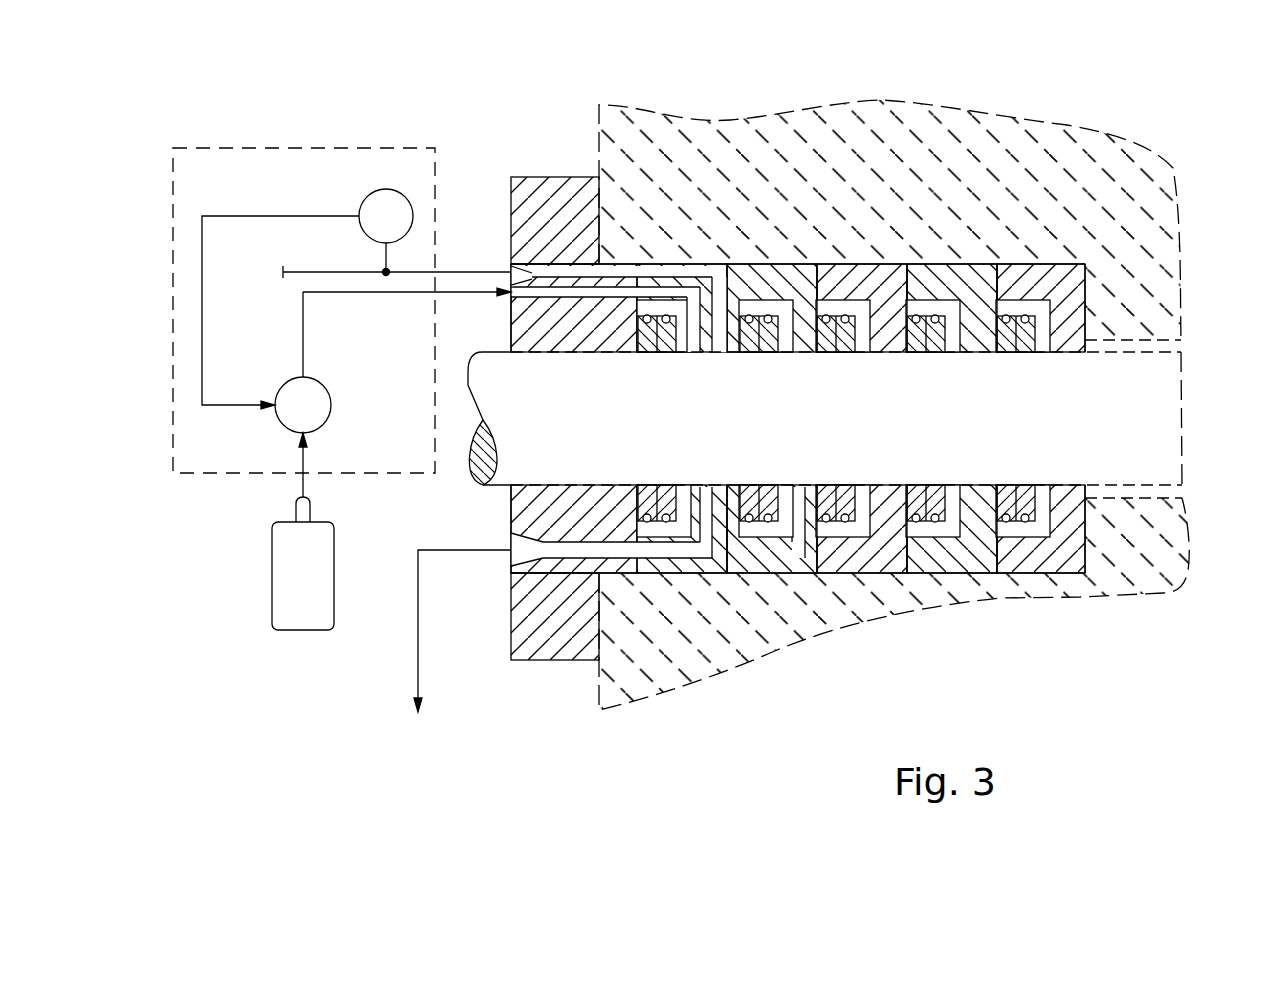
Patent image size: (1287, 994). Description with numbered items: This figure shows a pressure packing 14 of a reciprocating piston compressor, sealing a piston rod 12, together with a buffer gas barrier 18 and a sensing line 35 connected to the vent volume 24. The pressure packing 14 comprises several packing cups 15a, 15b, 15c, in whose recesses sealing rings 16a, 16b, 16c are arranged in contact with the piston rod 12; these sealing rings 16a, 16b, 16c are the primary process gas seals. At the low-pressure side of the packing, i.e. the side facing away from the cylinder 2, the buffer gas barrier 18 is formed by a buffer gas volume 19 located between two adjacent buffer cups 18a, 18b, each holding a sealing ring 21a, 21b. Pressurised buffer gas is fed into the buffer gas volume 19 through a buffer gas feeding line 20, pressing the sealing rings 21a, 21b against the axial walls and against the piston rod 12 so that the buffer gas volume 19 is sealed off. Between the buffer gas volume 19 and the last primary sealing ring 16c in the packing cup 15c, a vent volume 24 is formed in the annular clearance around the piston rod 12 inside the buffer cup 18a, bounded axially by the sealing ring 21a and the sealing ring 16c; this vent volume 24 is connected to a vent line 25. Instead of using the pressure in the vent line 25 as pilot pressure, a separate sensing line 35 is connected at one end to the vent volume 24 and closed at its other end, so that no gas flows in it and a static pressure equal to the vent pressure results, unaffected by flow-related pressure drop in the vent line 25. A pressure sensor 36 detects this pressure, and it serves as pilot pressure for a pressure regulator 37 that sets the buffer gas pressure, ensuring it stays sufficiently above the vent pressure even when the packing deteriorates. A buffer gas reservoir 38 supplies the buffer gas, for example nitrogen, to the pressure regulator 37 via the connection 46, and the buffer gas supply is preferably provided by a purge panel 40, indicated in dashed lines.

The cylinder 2 is at (1260, 459).
The piston rod 12 is at (1108, 420).
The pressure packing 14 is at (555, 210).
The packing cup 15a is at (1035, 545).
The packing cup 15b is at (978, 290).
The packing cup 15c is at (880, 293).
The sealing ring 16a is at (1035, 330).
The sealing ring 16b is at (933, 333).
The sealing ring 16c is at (847, 330).
The buffer gas barrier 18 is at (752, 228).
The buffer cup 18a is at (770, 293).
The buffer cup 18b is at (718, 303).
The buffer gas volume 19 is at (710, 487).
The buffer gas feeding line 20 is at (303, 335).
The sealing ring 21a is at (767, 500).
The sealing ring 21b is at (667, 500).
The vent volume 24 is at (798, 487).
The vent line 25 is at (455, 551).
The sensing line 35 is at (547, 273).
The pressure sensor 36 is at (370, 190).
The pressure regulator 37 is at (278, 424).
The buffer gas reservoir 38 is at (302, 600).
The purge panel 40 is at (368, 148).
The supply line 46 is at (296, 470).